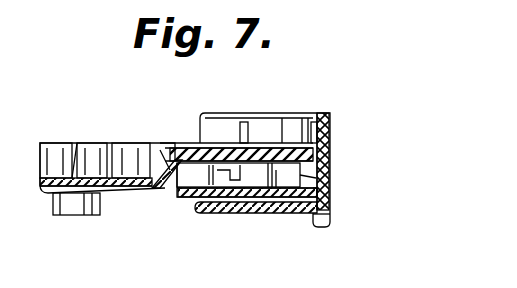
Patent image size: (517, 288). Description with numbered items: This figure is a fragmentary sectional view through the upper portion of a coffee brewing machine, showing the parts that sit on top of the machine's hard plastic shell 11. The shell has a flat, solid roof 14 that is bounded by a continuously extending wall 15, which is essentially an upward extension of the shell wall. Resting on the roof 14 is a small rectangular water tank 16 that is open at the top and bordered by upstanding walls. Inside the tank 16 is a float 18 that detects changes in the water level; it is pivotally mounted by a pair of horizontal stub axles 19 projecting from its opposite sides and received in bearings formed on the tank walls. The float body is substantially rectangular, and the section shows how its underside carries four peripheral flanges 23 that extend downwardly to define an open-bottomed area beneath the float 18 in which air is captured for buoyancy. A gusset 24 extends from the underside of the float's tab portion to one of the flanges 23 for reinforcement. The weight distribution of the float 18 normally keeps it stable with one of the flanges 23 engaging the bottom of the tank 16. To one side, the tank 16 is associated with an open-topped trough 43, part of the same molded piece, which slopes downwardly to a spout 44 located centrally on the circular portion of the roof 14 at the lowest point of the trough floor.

The shell 11 is at (327, 226).
The roof 14 is at (268, 213).
The wall 15 is at (331, 120).
The water tank 16 is at (186, 204).
The float 18 is at (200, 152).
The stub axles 19 is at (168, 152).
The peripheral flanges 23 is at (319, 196).
The gusset 24 is at (238, 175).
The trough 43 is at (118, 196).
The spout 44 is at (72, 210).